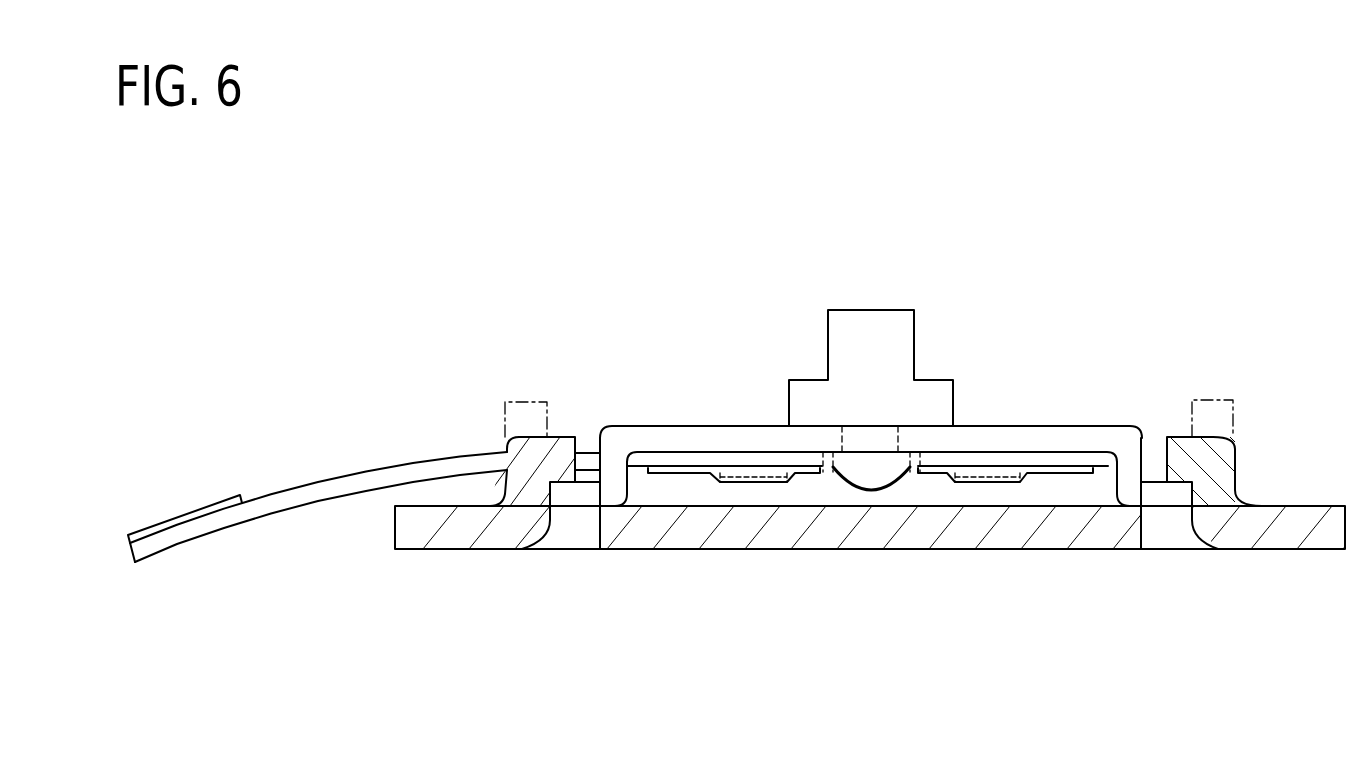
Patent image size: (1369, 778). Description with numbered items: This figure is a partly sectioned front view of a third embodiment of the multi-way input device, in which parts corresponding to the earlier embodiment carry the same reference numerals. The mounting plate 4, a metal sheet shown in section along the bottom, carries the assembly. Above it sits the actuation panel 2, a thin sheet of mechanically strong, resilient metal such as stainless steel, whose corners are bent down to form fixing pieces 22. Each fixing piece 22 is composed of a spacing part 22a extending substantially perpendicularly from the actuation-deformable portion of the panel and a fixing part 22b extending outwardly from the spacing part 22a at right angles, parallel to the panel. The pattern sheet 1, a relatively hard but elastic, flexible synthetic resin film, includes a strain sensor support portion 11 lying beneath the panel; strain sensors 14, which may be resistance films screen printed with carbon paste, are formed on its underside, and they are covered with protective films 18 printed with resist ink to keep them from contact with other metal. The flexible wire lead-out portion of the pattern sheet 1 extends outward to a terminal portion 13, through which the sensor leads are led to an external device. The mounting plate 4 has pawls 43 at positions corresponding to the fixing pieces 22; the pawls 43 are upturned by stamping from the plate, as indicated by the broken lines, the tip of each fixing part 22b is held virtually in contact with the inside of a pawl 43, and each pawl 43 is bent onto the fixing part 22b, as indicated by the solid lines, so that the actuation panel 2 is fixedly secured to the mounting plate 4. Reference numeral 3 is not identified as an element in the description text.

The pattern sheet 1 is at (323, 478).
The actuation panel 2 is at (1052, 420).
The push button 3 is at (893, 303).
The mounting plate 4 is at (862, 553).
The strain sensor support portion 11 is at (772, 457).
The terminal portion 13 is at (183, 513).
The strain sensors 14 is at (748, 475).
The protective films 18 is at (777, 483).
The fixing pieces 22 is at (677, 635).
The spacing part 22a is at (623, 475).
The fixing part 22b is at (579, 497).
The pawls 43 is at (563, 433).